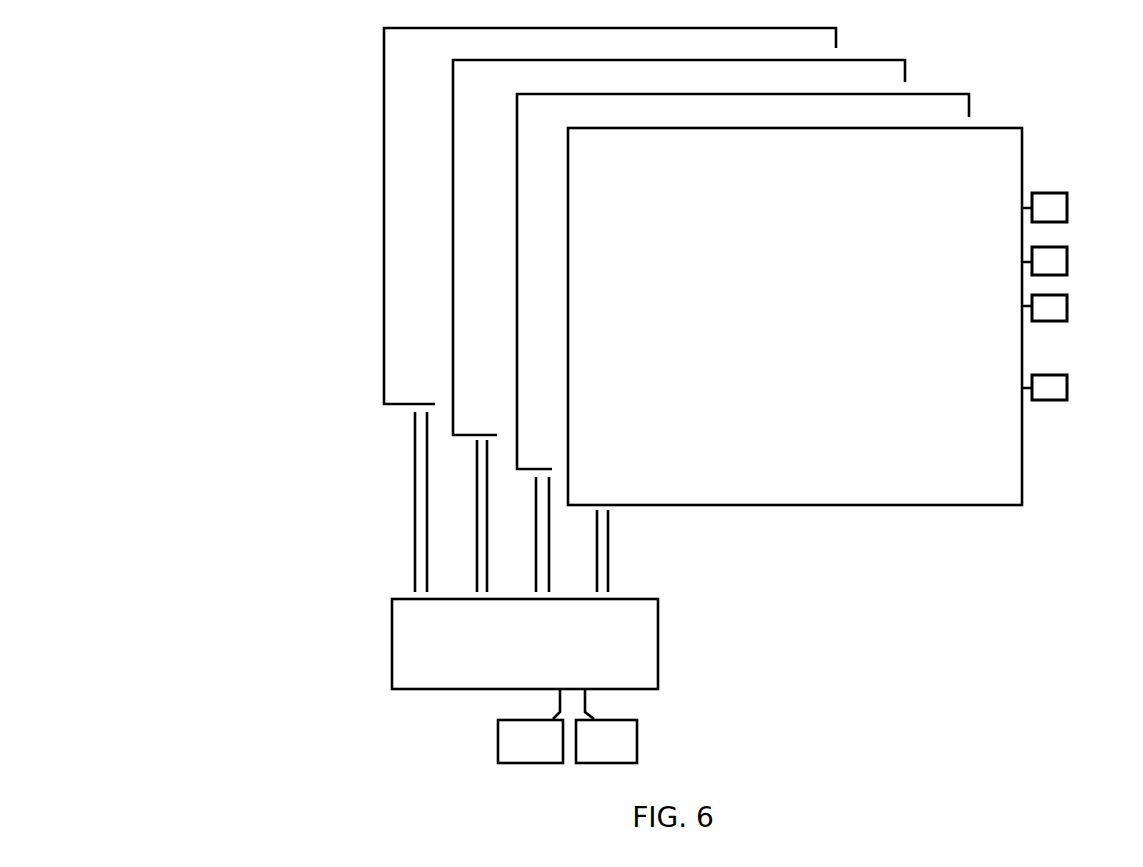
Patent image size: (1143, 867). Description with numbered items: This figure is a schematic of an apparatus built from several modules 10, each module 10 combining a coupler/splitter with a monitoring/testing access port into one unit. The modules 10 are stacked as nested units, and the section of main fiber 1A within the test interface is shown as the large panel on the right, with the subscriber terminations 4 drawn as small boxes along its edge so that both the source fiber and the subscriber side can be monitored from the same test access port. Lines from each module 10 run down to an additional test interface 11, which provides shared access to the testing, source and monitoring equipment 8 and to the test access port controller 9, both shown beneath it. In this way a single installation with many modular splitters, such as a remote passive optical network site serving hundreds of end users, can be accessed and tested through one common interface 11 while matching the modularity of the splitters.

The module 10 is at (550, 278).
The section of main fiber within test interface 1A is at (1022, 433).
The subscriber terminations 4 is at (1090, 206).
The additional test interface 11 is at (672, 642).
The testing, source and monitoring equipment 8 is at (488, 750).
The test access port controller 9 is at (653, 760).